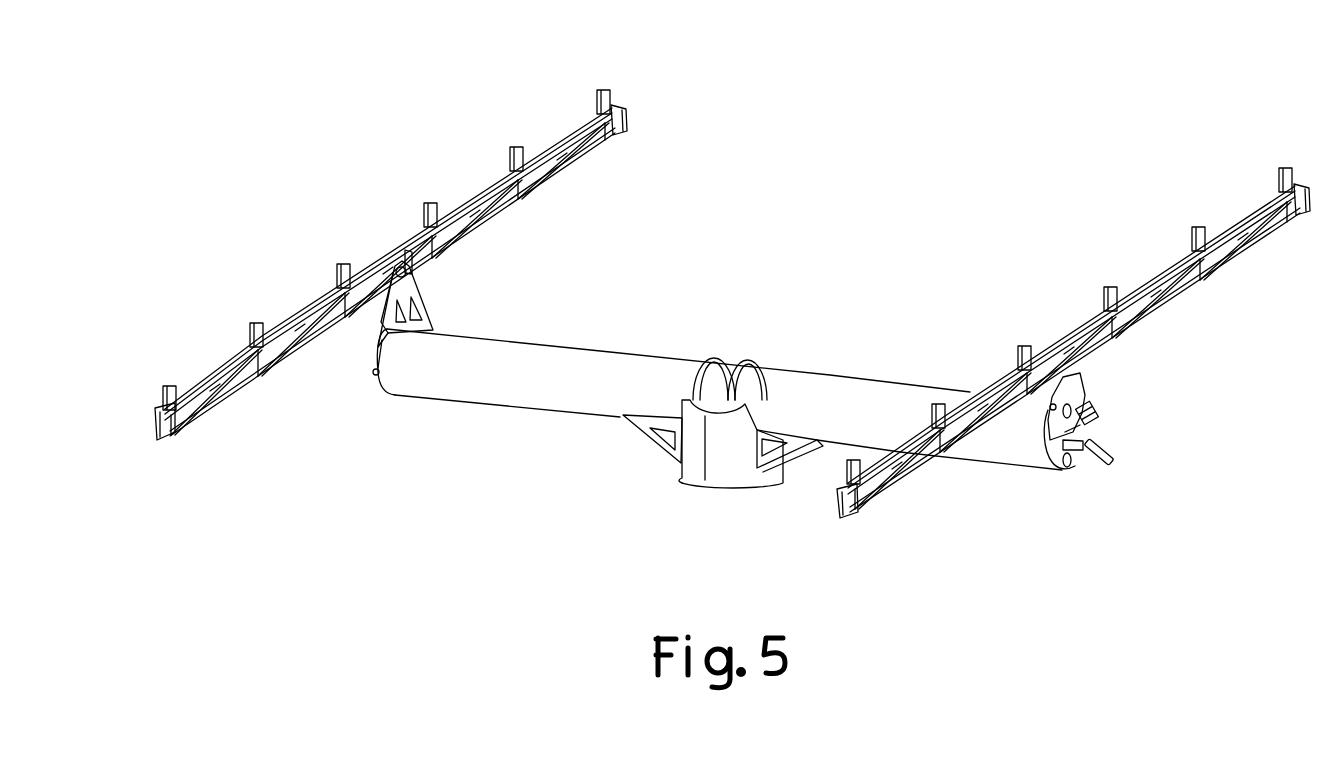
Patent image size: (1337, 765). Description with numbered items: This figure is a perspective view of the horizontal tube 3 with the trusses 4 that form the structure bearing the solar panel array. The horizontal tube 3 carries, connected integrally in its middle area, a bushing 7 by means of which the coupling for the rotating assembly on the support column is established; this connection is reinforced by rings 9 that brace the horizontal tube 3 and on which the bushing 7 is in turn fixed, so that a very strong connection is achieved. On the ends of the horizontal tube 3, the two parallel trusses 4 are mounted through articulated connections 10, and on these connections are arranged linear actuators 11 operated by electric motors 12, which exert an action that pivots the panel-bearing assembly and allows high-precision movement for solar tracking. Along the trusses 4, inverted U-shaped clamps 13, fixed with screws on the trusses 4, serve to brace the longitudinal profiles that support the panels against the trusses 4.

The horizontal tube 3 is at (540, 383).
The trusses 4 is at (488, 188).
The bushing 7 is at (727, 453).
The rings 9 is at (748, 360).
The articulated connections 10 is at (390, 253).
The linear actuators 11 is at (1102, 465).
The electric motors 12 is at (1095, 418).
The inverted U-shaped clamps 13 is at (343, 264).